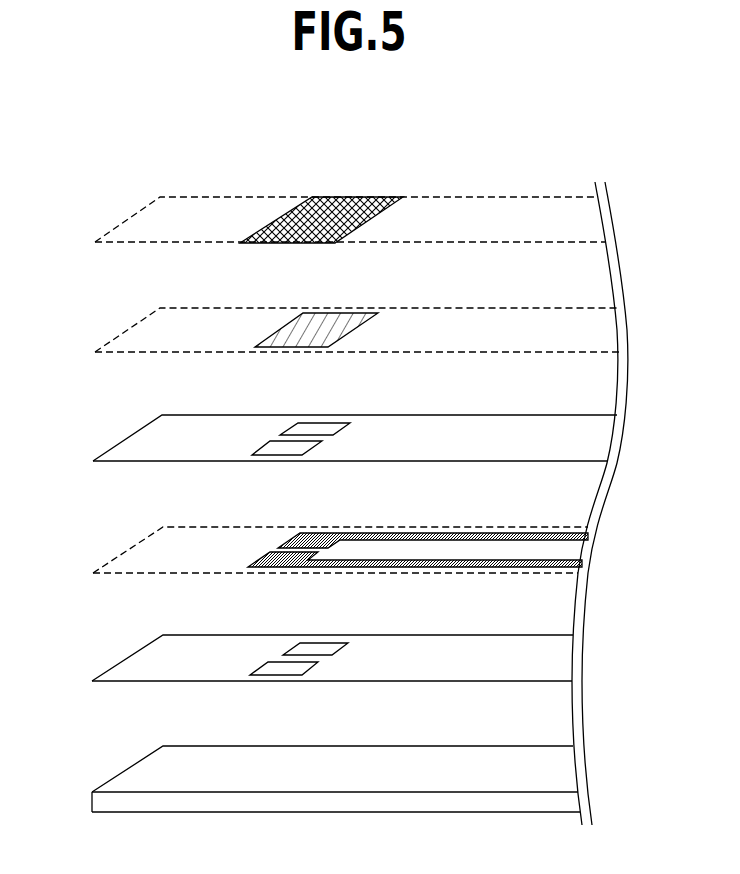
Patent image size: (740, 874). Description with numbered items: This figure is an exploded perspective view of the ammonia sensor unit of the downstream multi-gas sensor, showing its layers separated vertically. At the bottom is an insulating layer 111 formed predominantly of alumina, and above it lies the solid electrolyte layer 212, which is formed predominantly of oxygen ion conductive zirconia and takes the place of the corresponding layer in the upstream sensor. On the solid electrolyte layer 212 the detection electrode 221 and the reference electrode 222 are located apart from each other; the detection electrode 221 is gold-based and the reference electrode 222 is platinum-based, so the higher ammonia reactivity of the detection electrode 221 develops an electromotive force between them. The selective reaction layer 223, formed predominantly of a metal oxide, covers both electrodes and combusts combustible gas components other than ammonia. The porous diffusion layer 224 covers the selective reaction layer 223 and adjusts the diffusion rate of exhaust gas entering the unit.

The insulating layer 111 is at (142, 463).
The solid electrolyte layer 212 is at (230, 767).
The detection electrode 221 is at (288, 566).
The reference electrode 222 is at (322, 543).
The selective reaction layer 223 is at (292, 333).
The diffusion layer 224 is at (343, 205).